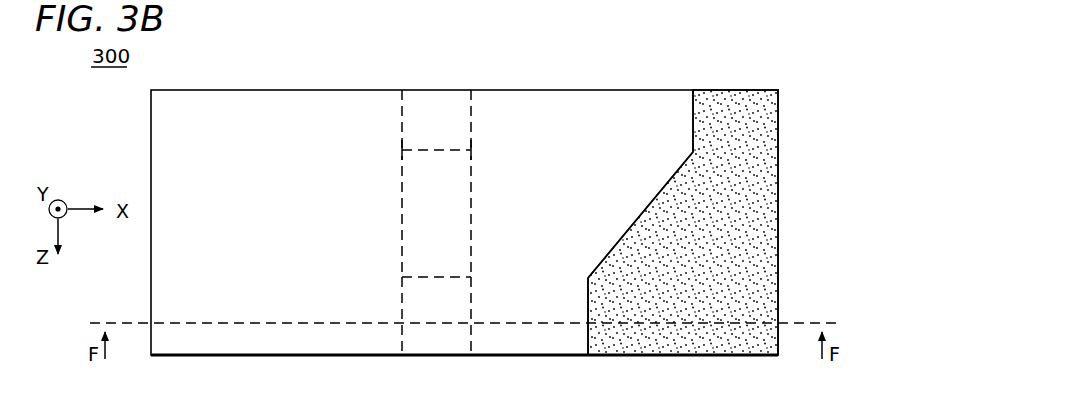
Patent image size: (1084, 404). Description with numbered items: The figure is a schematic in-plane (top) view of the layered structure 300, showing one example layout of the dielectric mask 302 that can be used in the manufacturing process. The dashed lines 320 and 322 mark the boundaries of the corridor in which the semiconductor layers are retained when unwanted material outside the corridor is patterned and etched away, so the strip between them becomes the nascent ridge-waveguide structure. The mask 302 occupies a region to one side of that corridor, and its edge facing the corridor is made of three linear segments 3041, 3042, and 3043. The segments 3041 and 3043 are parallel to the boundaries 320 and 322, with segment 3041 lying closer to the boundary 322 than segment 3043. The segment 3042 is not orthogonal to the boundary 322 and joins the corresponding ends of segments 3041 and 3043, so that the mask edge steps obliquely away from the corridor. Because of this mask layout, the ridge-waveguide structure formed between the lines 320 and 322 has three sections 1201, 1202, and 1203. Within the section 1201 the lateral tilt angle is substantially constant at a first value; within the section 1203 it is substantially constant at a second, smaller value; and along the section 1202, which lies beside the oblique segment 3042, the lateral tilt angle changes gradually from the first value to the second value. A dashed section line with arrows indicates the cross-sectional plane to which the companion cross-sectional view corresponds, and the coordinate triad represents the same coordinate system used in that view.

The layered structure 300 is at (464, 222).
The dielectric mask 302 is at (765, 192).
The first linear segment of mask edge 3041 is at (584, 297).
The second linear segment of mask edge 3042 is at (617, 237).
The third linear segment of mask edge 3043 is at (691, 114).
The first section of ridge-waveguide structure 1201 is at (412, 293).
The second section of ridge-waveguide structure 1202 is at (412, 214).
The third section of ridge-waveguide structure 1203 is at (439, 99).
The dashed line (boundary) 320 is at (399, 146).
The dashed line (boundary) 322 is at (475, 146).